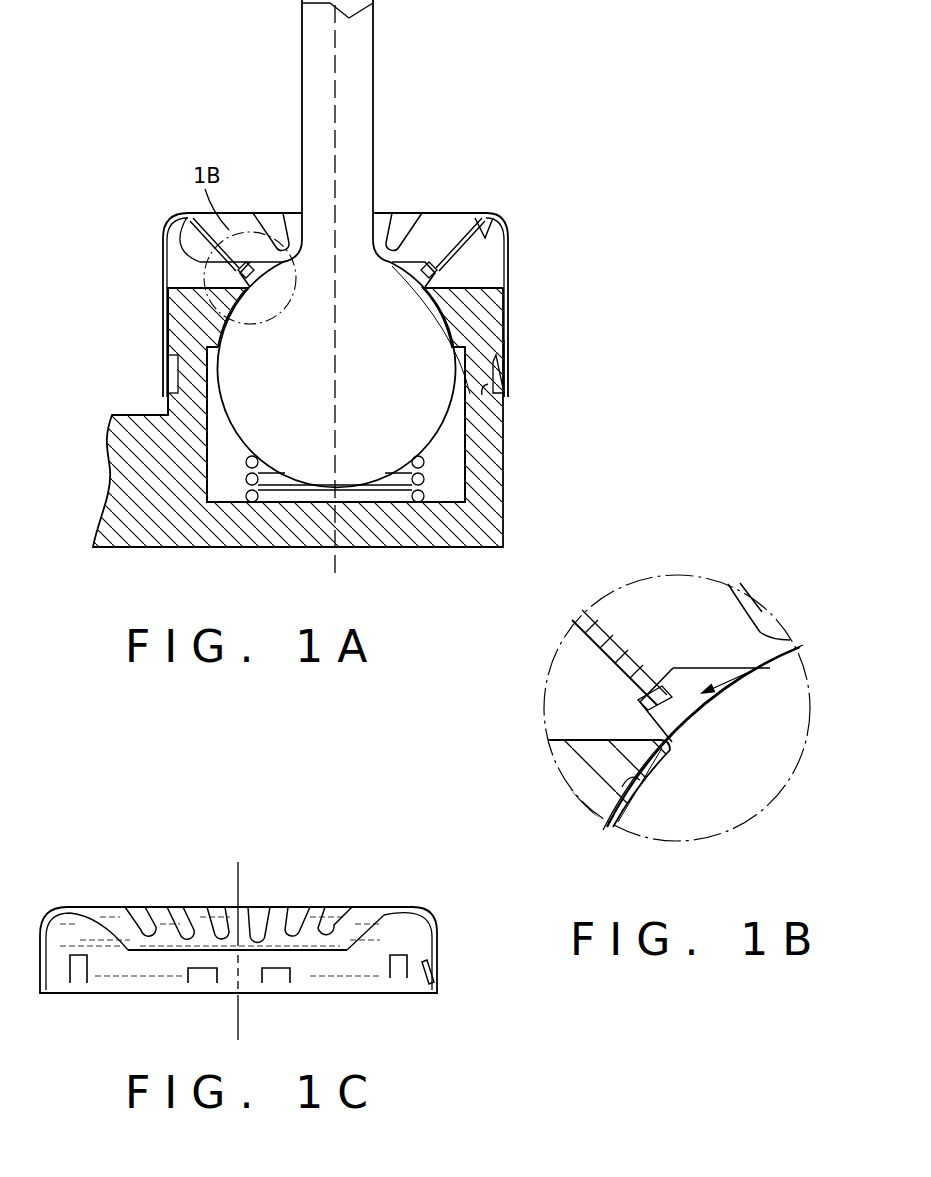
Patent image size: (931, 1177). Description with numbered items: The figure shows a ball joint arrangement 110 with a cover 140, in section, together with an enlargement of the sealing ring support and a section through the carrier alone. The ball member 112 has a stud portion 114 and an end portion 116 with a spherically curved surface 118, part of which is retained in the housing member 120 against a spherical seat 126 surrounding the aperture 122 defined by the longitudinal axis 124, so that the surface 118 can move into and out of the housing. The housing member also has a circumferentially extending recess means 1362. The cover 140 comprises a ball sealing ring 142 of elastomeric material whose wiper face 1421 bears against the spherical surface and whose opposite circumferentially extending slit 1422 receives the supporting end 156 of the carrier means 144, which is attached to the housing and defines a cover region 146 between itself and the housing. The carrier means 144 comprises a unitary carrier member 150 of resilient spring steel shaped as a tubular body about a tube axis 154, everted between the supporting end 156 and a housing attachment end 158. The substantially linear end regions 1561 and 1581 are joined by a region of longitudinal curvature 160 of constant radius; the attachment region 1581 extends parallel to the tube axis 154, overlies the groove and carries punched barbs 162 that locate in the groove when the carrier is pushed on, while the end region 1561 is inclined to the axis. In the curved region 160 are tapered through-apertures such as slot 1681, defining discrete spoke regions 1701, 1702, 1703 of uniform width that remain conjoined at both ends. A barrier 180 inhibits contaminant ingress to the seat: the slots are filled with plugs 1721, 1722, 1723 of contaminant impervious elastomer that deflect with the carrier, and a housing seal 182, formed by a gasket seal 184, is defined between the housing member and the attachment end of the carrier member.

In FIG. 1A, the ball joint arrangement 110 is at (243, 137).
In FIG. 1A, the ball member 112 is at (283, 78).
In FIG. 1A, the stud shank 114 is at (352, 66).
In FIG. 1A, the end portion 116 is at (415, 391).
In FIG. 1A, the spherically curved surface 118 is at (500, 420).
In FIG. 1A, the housing member 120 is at (137, 405).
In FIG. 1B, the housing member 120 is at (588, 766).
In FIG. 1A, the aperture 122 is at (237, 325).
In FIG. 1B, the aperture 122 is at (673, 758).
In FIG. 1A, the longitudinal axis 124 is at (335, 578).
In FIG. 1A, the spherical seat 126 is at (172, 295).
In FIG. 1B, the spherical seat 126 is at (623, 790).
In FIG. 1A, the recess means 1362 is at (503, 404).
In FIG. 1A, the cover 140 is at (484, 188).
In FIG. 1A, the ball sealing ring 142 is at (427, 215).
In FIG. 1B, the ball sealing ring 142 is at (796, 651).
In FIG. 1B, the wiper face 1421 is at (722, 730).
In FIG. 1B, the circumferentially extending slit 1422 is at (640, 713).
In FIG. 1A, the carrier means 144 is at (214, 258).
In FIG. 1C, the carrier means 144 is at (450, 963).
In FIG. 1A, the cover region 146 is at (496, 269).
In FIG. 1A, the unitary carrier member 150 is at (509, 222).
In FIG. 1C, the unitary carrier member 150 is at (433, 918).
In FIG. 1C, the tube axis 154 is at (238, 1016).
In FIG. 1B, the supporting end 156 is at (642, 680).
In FIG. 1C, the supporting end 156 is at (313, 955).
In FIG. 1C, the end region 1561 is at (367, 937).
In FIG. 1C, the housing attachment end 158 is at (360, 993).
In FIG. 1C, the end region 1581 is at (435, 935).
In FIG. 1C, the region of longitudinal curvature 160 is at (416, 906).
In FIG. 1C, the punched barbs 162 is at (187, 975).
In FIG. 1A, the through-aperture 1681 is at (497, 222).
In FIG. 1A, the spoke region 1701 is at (437, 216).
In FIG. 1C, the spoke region 1701 is at (321, 912).
In FIG. 1C, the spoke region 1702 is at (268, 918).
In FIG. 1C, the spoke region 1703 is at (227, 902).
In FIG. 1A, the plug 1721 is at (458, 216).
In FIG. 1C, the plug 1721 is at (377, 905).
In FIG. 1C, the plug 1722 is at (290, 917).
In FIG. 1C, the plug 1723 is at (236, 910).
In FIG. 1A, the barrier 180 is at (518, 293).
In FIG. 1A, the housing seal 182 is at (481, 305).
In FIG. 1A, the gasket seal 184 is at (508, 338).